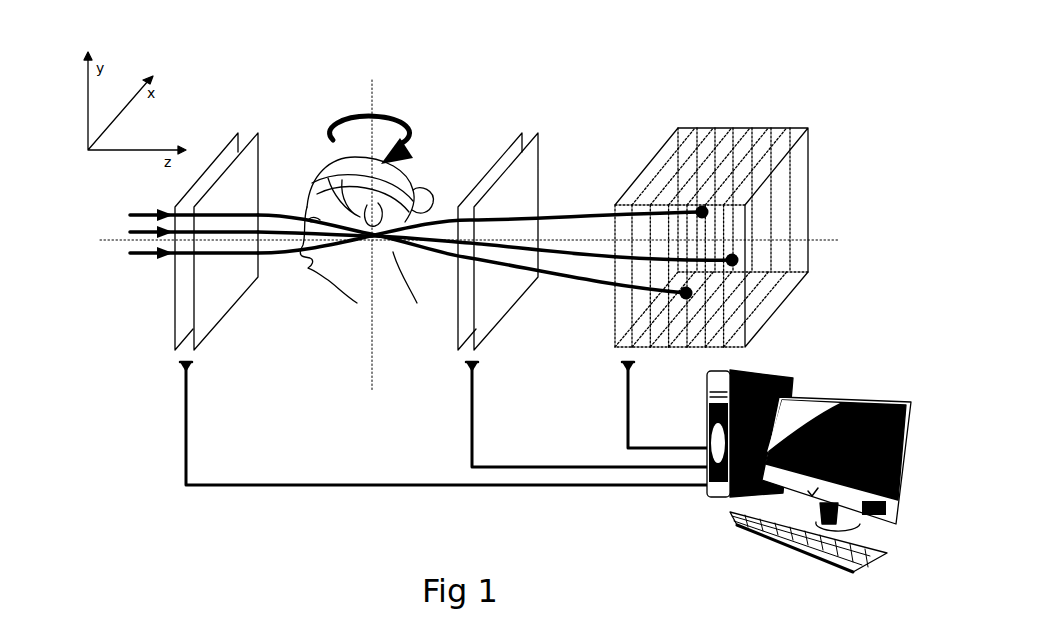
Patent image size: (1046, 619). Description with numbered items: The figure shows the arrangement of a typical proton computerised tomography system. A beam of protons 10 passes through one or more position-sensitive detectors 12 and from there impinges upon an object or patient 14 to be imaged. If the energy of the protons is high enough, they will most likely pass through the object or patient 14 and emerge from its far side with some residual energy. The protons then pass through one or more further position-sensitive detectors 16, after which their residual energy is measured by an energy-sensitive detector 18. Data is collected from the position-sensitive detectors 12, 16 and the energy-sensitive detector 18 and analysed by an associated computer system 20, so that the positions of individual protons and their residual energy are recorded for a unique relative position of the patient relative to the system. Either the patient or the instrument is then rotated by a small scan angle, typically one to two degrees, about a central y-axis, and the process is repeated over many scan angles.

The beam of protons 10 is at (130, 272).
The position-sensitive detectors 12 is at (249, 116).
The object or patient 14 is at (310, 143).
The position-sensitive detectors 16 is at (550, 126).
The energy-sensitive detector 18 is at (824, 108).
The computer system 20 is at (824, 366).